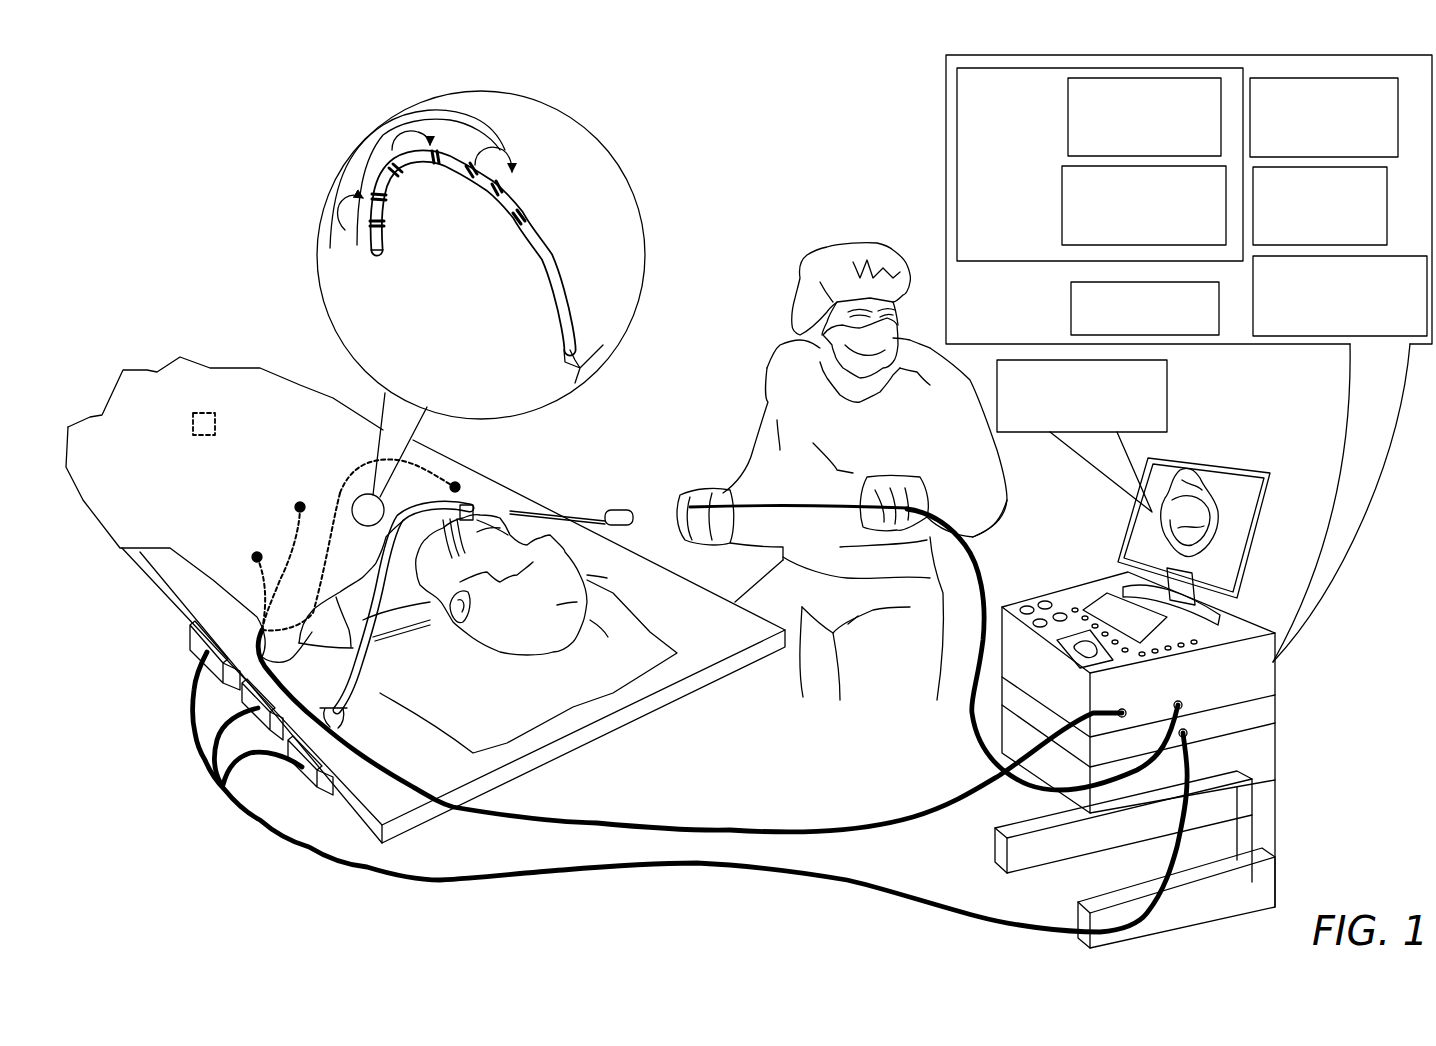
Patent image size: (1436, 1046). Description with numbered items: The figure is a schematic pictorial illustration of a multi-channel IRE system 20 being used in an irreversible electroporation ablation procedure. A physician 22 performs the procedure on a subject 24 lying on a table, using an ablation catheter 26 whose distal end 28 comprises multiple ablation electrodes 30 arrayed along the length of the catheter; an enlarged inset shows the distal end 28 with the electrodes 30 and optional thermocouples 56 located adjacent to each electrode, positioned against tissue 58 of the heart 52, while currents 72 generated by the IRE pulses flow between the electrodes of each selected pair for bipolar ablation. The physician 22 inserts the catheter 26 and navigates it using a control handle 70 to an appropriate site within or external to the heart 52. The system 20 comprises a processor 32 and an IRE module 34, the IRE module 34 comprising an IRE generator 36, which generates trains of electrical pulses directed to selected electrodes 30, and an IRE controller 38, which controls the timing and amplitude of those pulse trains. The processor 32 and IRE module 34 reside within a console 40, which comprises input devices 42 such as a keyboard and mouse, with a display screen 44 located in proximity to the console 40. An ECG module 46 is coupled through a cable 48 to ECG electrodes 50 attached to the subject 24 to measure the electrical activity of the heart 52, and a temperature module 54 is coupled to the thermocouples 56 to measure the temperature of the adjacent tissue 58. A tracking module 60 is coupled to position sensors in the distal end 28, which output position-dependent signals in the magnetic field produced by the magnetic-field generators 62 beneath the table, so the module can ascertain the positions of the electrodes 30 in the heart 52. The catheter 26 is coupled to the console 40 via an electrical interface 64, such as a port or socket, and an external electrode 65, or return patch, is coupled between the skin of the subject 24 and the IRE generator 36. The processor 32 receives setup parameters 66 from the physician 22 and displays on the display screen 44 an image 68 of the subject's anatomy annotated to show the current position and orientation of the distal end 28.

The multi-channel IRE system 20 is at (1267, 452).
The physician 22 is at (800, 280).
The subject 24 is at (620, 607).
The ablation catheter 26 is at (587, 513).
The distal end 28 is at (457, 276).
The ablation electrodes 30 is at (390, 200).
The processor 32 is at (1071, 307).
The IRE module 34 is at (946, 160).
The IRE generator 36 is at (1068, 145).
The IRE controller 38 is at (1062, 200).
The console 40 is at (1240, 612).
The input devices 42 is at (1069, 600).
The display screen 44 is at (1194, 499).
The ECG module 46 is at (1398, 118).
The cable 48 is at (733, 827).
The ECG electrodes 50 is at (300, 507).
The heart 52 is at (348, 498).
The temperature module 54 is at (1340, 336).
The thermocouples 56 is at (513, 228).
The tissue 58 is at (467, 133).
The tracking module 60 is at (1387, 205).
The magnetic-field generators 62 is at (207, 652).
The electrical interface 64 is at (1180, 705).
The external electrode 65 is at (204, 413).
The setup parameters 66 is at (1033, 432).
The image 68 is at (1180, 470).
The control handle 70 is at (703, 493).
The currents 72 is at (383, 150).